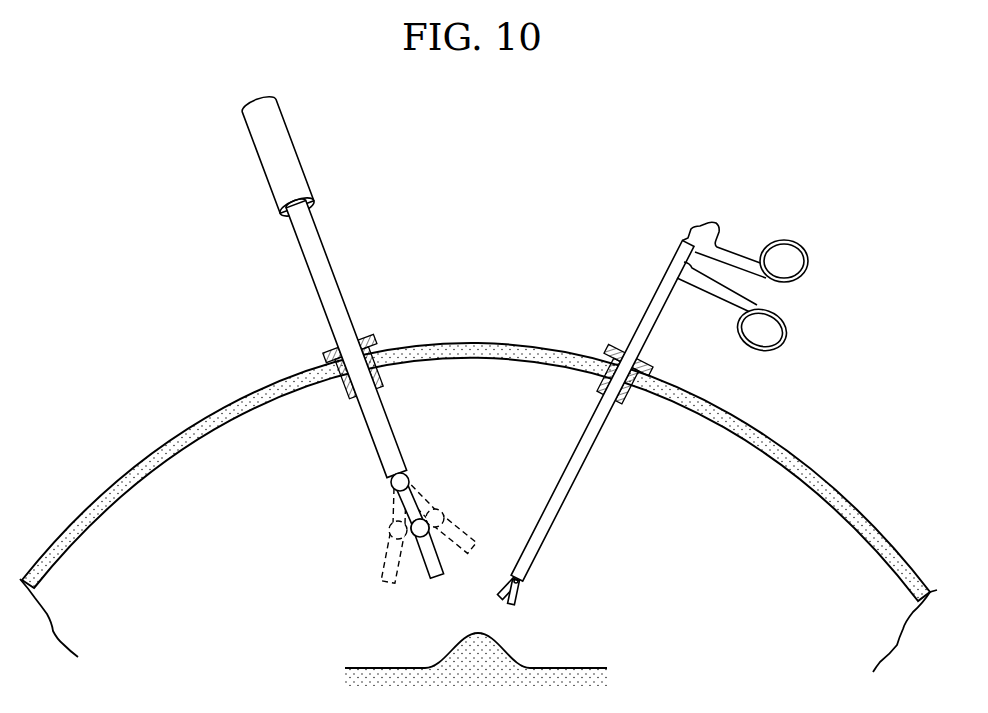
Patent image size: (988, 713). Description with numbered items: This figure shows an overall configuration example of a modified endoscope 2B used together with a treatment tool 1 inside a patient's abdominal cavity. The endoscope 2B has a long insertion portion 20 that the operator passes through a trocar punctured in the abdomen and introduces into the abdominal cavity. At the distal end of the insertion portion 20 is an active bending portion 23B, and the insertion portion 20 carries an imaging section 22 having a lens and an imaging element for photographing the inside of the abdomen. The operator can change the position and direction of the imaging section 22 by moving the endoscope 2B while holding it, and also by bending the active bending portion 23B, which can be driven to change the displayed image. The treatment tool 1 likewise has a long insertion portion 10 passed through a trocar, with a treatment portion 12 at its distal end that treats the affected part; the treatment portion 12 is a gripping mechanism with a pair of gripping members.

The endoscope 2B is at (212, 181).
The insertion portion 20 is at (321, 300).
The active bending portion 23B is at (412, 530).
The imaging section 22 is at (435, 580).
The treatment tool 1 is at (821, 231).
The insertion portion 10 is at (581, 469).
The treatment portion 12 is at (524, 596).